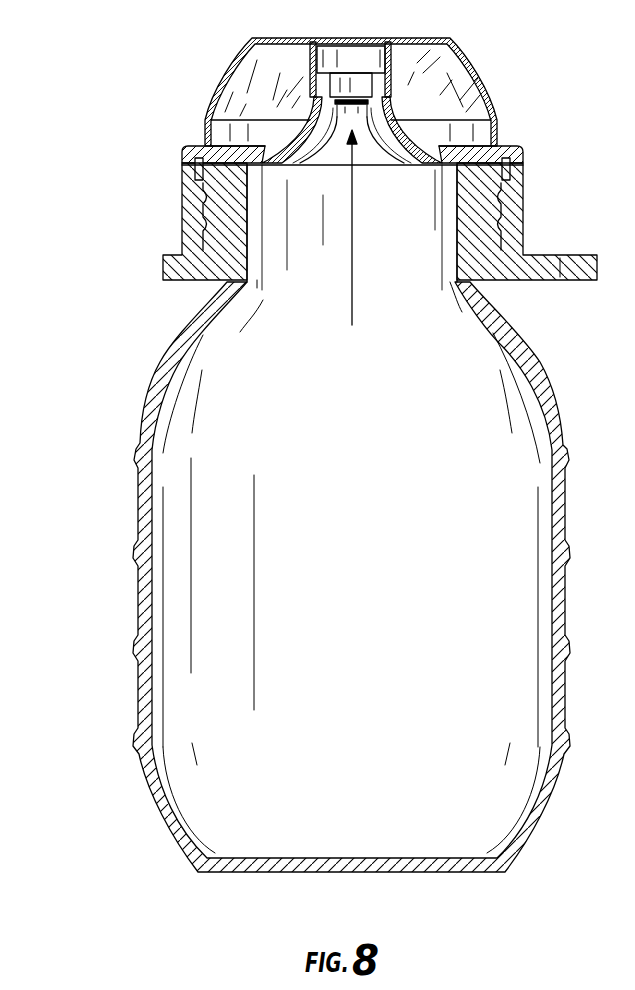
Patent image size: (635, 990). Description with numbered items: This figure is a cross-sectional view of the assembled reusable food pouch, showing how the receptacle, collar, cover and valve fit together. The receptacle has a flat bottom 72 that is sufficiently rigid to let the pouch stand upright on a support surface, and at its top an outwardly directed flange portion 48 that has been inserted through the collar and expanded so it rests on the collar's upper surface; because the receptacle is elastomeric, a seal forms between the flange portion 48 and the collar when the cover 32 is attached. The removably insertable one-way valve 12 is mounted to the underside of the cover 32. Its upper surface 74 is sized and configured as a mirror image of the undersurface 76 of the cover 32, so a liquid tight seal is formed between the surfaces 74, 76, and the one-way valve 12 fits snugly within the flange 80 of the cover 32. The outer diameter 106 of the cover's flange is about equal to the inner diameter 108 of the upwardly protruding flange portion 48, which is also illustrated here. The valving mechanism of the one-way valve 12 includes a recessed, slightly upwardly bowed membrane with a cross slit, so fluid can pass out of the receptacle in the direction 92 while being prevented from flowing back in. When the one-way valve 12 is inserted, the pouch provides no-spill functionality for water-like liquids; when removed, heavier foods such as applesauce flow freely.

The cover 32 is at (388, 140).
The upper surface 74 is at (429, 98).
The undersurface 76 is at (397, 118).
The flange 80 is at (500, 147).
The flange portion 48 is at (478, 175).
The outer diameter 106 is at (133, 215).
The inner diameter 108 is at (200, 167).
The one-way valve 12 is at (372, 118).
The direction 92 is at (352, 300).
The flat bottom 72 is at (432, 871).